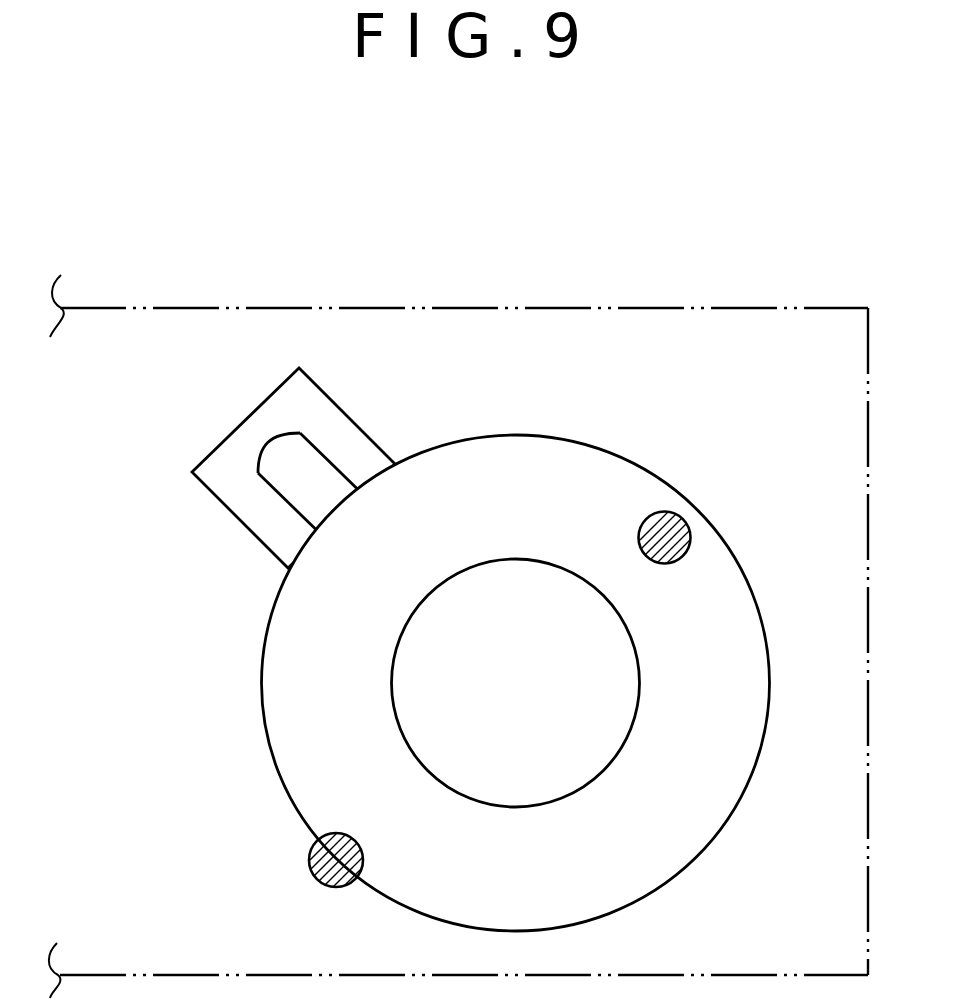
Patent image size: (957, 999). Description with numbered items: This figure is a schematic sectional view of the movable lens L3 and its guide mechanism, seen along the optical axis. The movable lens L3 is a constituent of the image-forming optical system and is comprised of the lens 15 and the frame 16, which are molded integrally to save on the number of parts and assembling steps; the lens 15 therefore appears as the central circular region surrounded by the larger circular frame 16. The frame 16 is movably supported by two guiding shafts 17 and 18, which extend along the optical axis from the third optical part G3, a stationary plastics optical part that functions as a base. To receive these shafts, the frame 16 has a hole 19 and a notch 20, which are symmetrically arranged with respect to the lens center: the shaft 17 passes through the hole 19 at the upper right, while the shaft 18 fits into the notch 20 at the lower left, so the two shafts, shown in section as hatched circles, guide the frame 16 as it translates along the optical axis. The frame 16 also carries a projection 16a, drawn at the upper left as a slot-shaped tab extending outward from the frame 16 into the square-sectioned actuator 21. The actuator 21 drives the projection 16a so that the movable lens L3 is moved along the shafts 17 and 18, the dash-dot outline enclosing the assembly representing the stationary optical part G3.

The third optical part G3 is at (747, 308).
The movable lens L3 is at (610, 448).
The lens 15 is at (570, 727).
The frame 16 is at (575, 890).
The projection 16a is at (308, 480).
The shaft 17 is at (690, 543).
The shaft 18 is at (323, 877).
The hole 19 is at (690, 516).
The notch 20 is at (317, 852).
The actuator 21 is at (262, 515).